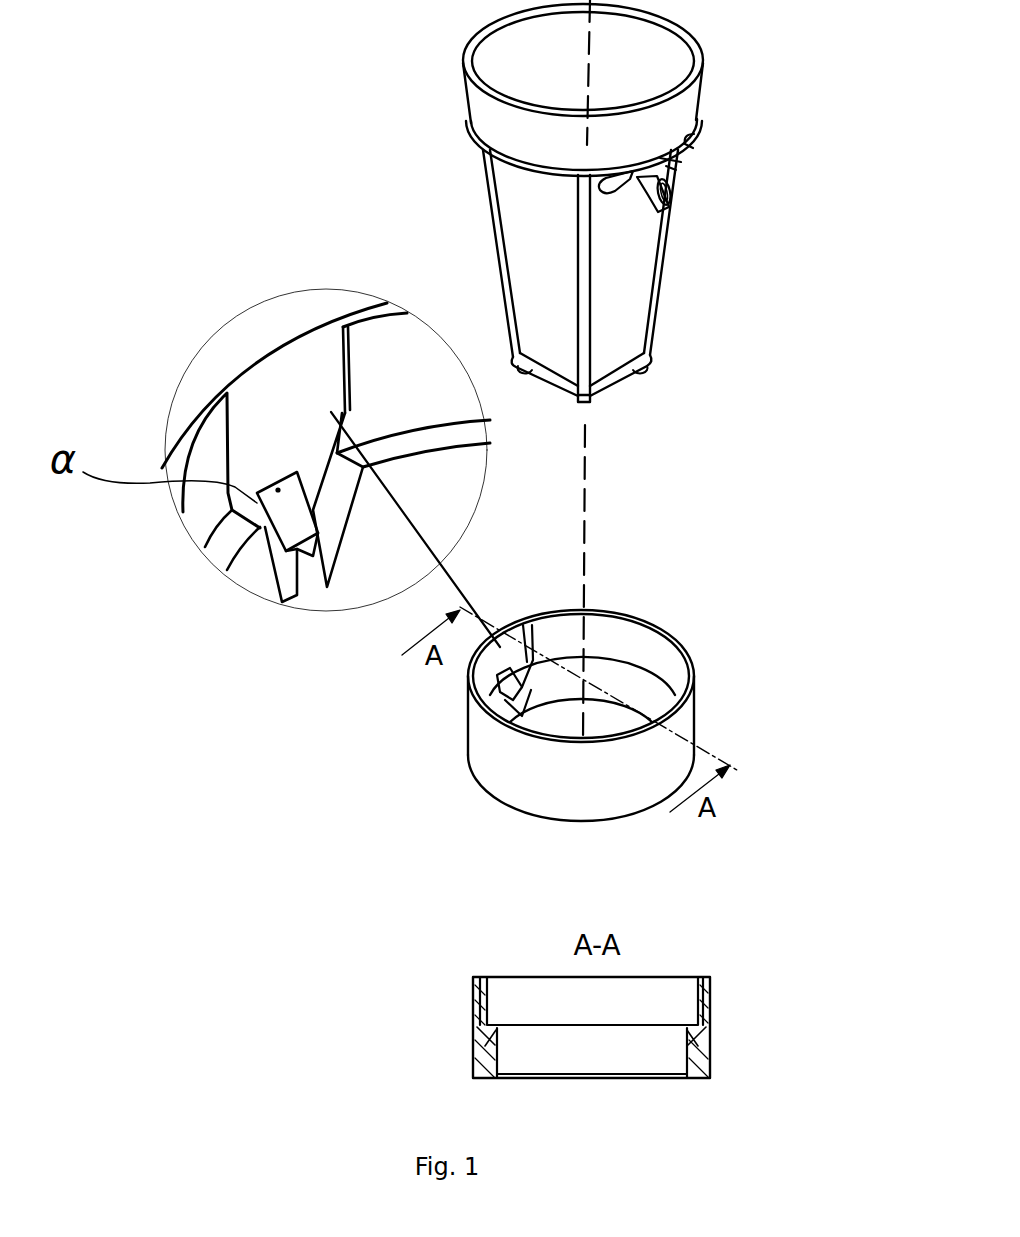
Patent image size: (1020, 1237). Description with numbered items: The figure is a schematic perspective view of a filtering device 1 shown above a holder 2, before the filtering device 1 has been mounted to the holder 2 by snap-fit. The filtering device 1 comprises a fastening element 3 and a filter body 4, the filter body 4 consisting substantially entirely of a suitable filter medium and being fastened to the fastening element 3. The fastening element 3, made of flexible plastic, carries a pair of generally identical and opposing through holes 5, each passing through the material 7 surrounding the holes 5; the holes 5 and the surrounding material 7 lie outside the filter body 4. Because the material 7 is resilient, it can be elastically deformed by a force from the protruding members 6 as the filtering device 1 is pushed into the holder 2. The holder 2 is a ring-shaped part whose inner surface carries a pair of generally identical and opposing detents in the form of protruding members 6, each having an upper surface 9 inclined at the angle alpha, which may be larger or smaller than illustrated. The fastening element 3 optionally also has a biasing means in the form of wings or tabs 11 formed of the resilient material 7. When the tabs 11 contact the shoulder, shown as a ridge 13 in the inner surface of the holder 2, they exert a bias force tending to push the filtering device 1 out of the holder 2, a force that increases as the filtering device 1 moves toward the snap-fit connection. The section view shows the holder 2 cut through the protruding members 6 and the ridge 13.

The filtering device 1 is at (410, 95).
The holder 2 is at (693, 727).
The fastening element 3 is at (665, 160).
The filter body 4 is at (540, 237).
The through holes 5 is at (673, 190).
The protruding members 6 is at (298, 568).
The material surrounding the holes 7 is at (672, 210).
The upper surface 9 is at (277, 487).
The tabs 11 is at (690, 147).
The ridge 13 is at (437, 437).